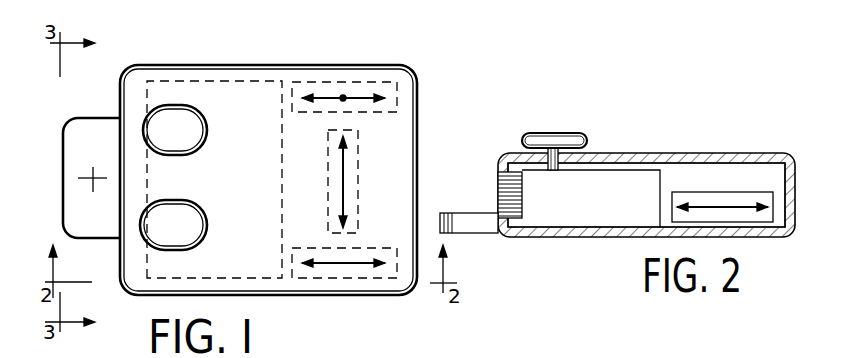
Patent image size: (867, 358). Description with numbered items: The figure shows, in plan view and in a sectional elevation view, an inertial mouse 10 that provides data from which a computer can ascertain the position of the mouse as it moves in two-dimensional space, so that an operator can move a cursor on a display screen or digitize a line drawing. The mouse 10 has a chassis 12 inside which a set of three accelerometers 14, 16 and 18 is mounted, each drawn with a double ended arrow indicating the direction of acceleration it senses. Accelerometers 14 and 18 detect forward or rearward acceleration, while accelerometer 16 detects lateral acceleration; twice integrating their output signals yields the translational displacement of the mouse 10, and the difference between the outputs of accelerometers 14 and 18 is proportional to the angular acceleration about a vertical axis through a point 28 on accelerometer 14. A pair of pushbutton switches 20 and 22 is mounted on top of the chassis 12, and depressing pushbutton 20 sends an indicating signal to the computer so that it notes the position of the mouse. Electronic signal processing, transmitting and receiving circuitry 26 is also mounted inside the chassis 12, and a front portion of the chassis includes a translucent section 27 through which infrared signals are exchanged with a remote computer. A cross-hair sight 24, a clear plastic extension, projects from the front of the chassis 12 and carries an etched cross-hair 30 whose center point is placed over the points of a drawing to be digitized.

In FIG. 1, the inertial mouse 10 is at (395, 54).
In FIG. 2, the inertial mouse 10 is at (670, 137).
In FIG. 1, the chassis 12 is at (280, 64).
In FIG. 2, the chassis 12 is at (792, 158).
In FIG. 1, the accelerometer 14 is at (364, 113).
In FIG. 1, the accelerometer 16 is at (328, 172).
In FIG. 1, the accelerometer 18 is at (392, 248).
In FIG. 2, the accelerometer 18 is at (712, 192).
In FIG. 1, the pushbutton switch 20 is at (209, 135).
In FIG. 1, the pushbutton switch 22 is at (208, 238).
In FIG. 2, the pushbutton switch 22 is at (528, 134).
In FIG. 1, the cross-hair sight 24 is at (97, 117).
In FIG. 2, the cross-hair sight 24 is at (469, 202).
In FIG. 1, the electronic signal processing, transmitting and receiving circuitry 26 is at (189, 80).
In FIG. 2, the electronic signal processing, transmitting and receiving circuitry 26 is at (637, 169).
In FIG. 2, the translucent section 27 is at (498, 182).
In FIG. 1, the point 28 is at (343, 95).
In FIG. 1, the cross-hair 30 is at (95, 185).